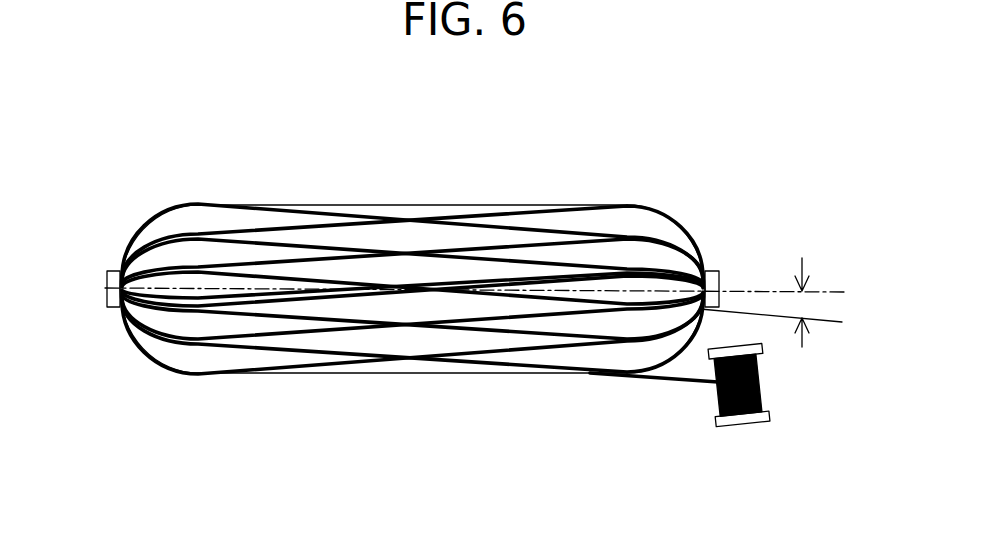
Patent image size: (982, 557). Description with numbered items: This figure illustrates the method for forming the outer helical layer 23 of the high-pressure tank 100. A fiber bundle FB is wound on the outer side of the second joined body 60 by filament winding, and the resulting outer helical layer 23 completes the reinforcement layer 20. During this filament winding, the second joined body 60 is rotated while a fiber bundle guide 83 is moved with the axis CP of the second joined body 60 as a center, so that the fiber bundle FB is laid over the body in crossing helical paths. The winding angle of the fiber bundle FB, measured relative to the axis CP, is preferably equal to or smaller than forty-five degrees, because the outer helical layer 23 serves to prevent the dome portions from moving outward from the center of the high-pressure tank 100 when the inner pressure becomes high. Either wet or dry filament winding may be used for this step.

The high-pressure tank 100 is at (707, 153).
The reinforcement layer 20 is at (492, 200).
The outer helical layer 23 is at (400, 206).
The second joined body 60 is at (173, 360).
The fiber bundle guide 83 is at (752, 428).
The fiber bundle FB is at (665, 380).
The axis CP is at (496, 291).